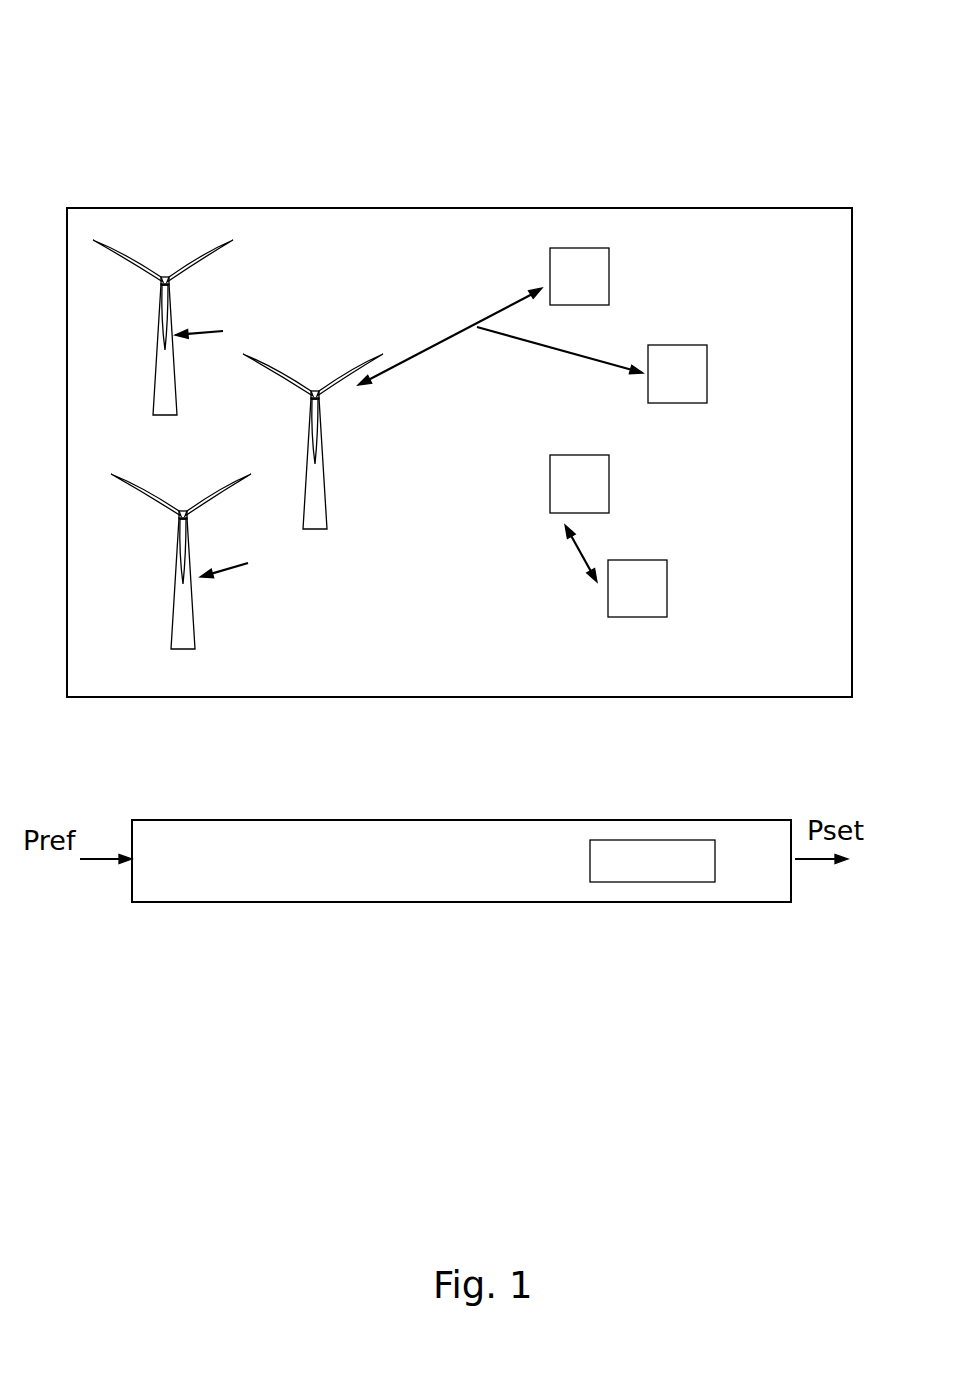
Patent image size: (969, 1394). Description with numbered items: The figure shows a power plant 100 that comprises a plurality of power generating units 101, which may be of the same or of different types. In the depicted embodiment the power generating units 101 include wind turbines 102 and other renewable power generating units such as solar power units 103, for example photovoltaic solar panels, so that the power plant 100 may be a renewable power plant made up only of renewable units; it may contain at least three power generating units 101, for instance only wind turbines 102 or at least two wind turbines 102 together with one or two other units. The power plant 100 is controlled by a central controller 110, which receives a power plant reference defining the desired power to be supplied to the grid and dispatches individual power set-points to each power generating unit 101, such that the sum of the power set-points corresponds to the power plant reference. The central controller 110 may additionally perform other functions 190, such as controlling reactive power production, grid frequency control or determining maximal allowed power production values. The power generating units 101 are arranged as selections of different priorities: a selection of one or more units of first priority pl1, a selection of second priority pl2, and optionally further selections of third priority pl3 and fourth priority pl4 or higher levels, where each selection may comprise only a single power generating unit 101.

The power plant 100 is at (158, 65).
The power generating unit 101 is at (187, 308).
The wind turbine 102 is at (323, 458).
The solar power unit 103 is at (713, 373).
The central controller 110 is at (252, 917).
The other functions 190 is at (583, 858).
The first priority pl1 is at (500, 336).
The second priority pl2 is at (222, 328).
The third priority pl3 is at (562, 553).
The fourth priority pl4 is at (247, 560).